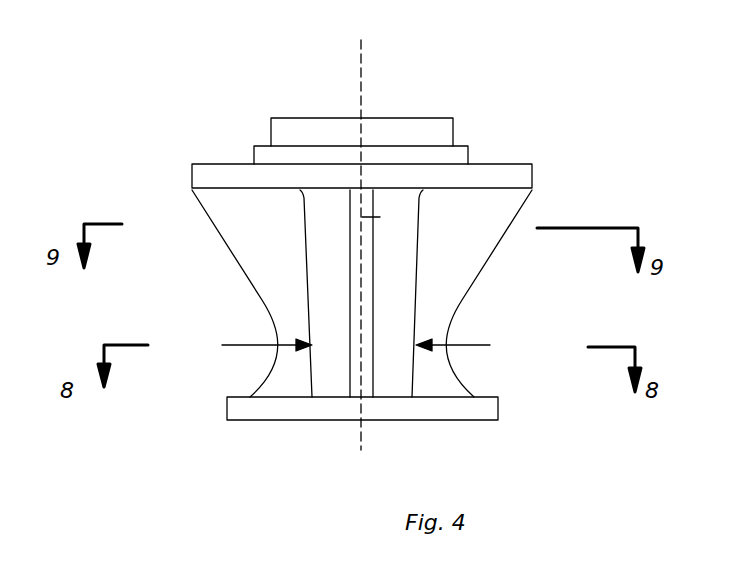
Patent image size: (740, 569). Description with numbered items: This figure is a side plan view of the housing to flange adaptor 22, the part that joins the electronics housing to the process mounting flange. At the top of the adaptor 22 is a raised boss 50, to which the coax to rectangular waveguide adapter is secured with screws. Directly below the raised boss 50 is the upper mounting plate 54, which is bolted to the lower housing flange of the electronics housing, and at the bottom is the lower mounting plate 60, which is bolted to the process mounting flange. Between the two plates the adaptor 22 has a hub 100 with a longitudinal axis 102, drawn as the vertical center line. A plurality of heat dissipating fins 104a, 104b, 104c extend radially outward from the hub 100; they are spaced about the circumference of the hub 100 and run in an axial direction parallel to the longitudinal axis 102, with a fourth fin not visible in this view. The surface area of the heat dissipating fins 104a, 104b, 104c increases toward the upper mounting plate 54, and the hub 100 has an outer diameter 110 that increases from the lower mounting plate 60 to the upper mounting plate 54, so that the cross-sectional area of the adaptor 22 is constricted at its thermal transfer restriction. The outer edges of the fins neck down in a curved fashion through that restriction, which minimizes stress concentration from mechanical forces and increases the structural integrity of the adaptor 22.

The housing to flange adaptor 22 is at (161, 99).
The raised boss 50 is at (403, 118).
The upper mounting plate 54 is at (500, 163).
The lower mounting plate 60 is at (470, 420).
The hub 100 is at (322, 300).
The longitudinal axis 102 is at (360, 40).
The heat dissipating fin 104a is at (238, 235).
The heat dissipating fin 104b is at (362, 217).
The heat dissipating fin 104c is at (472, 247).
The outer diameter 110 is at (470, 345).